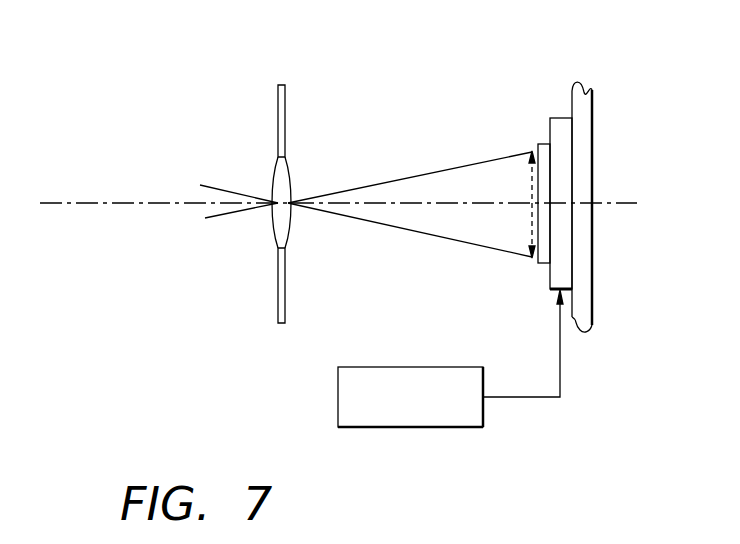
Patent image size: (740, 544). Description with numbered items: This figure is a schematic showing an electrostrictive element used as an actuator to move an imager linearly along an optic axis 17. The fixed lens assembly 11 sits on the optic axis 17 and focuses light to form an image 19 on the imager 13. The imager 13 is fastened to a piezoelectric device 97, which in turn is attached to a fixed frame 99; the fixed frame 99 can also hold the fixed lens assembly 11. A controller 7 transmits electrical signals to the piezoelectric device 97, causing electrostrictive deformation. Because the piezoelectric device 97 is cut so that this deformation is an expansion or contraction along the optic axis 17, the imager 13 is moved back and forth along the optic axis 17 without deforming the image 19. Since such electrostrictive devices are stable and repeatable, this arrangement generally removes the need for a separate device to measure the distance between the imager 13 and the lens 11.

The controller 7 is at (417, 427).
The fixed lens assembly 11 is at (275, 168).
The imager 13 is at (540, 143).
The optic axis 17 is at (108, 202).
The image 19 is at (532, 215).
The piezoelectric device 97 is at (562, 118).
The fixed frame 99 is at (593, 155).